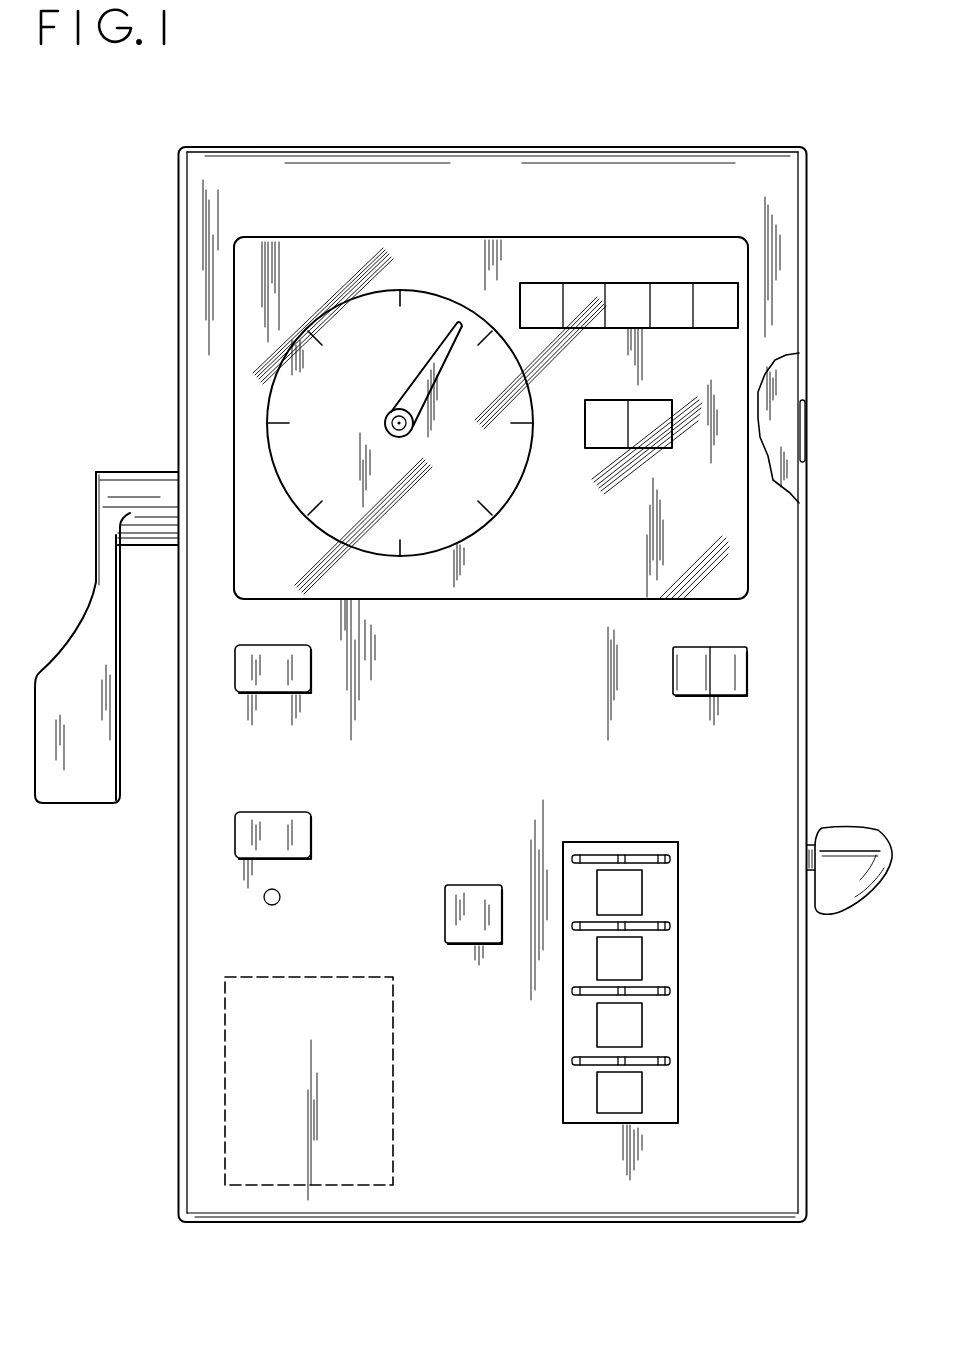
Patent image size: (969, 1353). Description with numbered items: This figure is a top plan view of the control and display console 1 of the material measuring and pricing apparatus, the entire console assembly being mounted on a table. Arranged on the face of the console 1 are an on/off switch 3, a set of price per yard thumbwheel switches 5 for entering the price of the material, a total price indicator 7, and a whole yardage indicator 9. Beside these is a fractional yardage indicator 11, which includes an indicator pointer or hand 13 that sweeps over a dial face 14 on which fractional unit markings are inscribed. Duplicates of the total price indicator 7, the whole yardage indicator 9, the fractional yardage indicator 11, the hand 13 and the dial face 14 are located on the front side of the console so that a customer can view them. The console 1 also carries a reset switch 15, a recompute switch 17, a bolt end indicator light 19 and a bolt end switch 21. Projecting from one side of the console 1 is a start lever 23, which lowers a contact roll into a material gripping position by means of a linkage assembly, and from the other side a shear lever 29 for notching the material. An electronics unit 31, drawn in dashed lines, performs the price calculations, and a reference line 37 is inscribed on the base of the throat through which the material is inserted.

The control and display console 1 is at (180, 1075).
The on/off switch 3 is at (673, 678).
The price per yard thumbwheel switches 5 is at (584, 922).
The total price indicator 7 is at (620, 283).
The whole yardage indicator 9 is at (660, 400).
The fractional yardage indicator 11 is at (400, 403).
The indicator pointer or hand 13 is at (412, 378).
The dial face 14 is at (400, 355).
The reset switch 15 is at (262, 645).
The recompute switch 17 is at (470, 885).
The bolt end indicator light 19 is at (280, 903).
The bolt end switch 21 is at (312, 835).
The start lever 23 is at (78, 805).
The shear lever 29 is at (857, 900).
The electronics unit 31 is at (393, 1105).
The reference line 37 is at (808, 423).